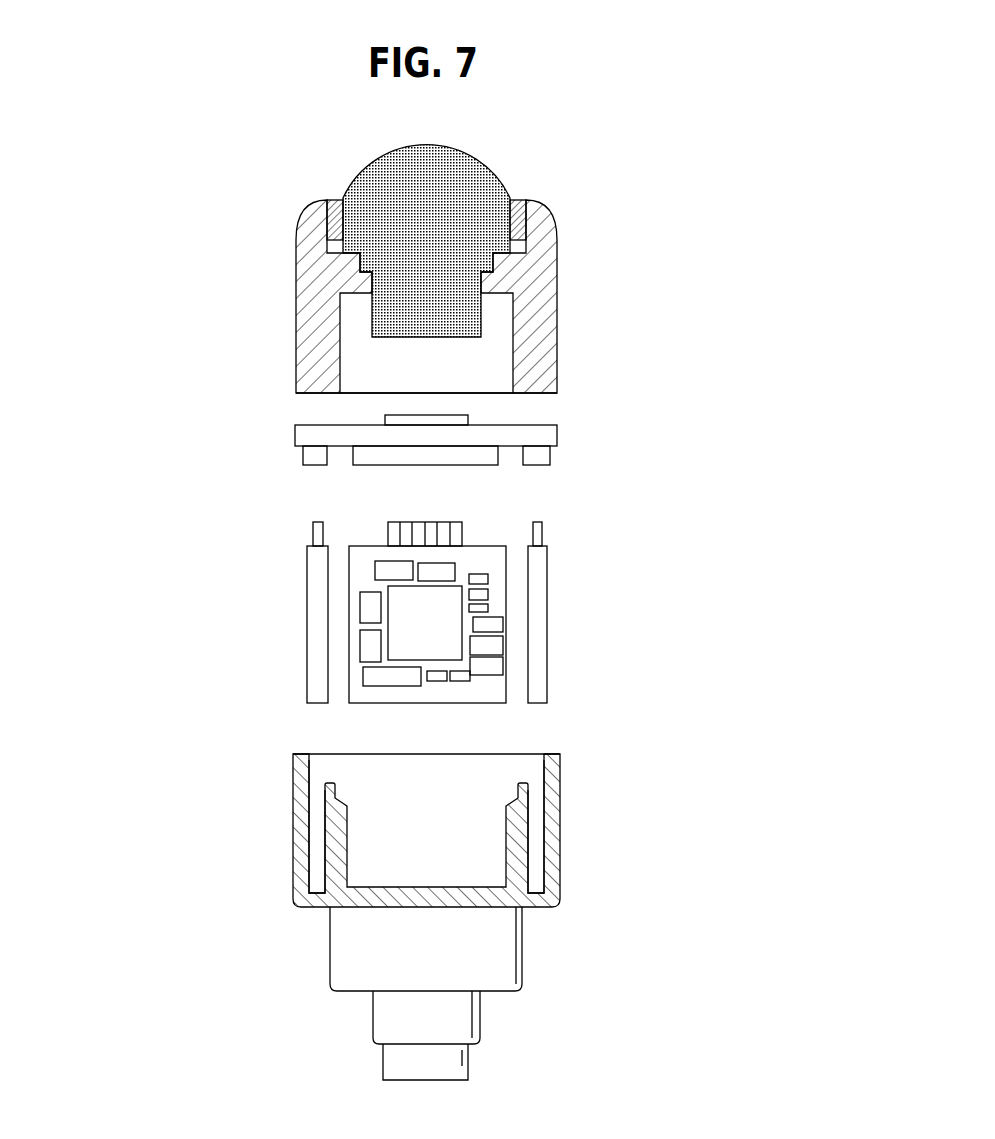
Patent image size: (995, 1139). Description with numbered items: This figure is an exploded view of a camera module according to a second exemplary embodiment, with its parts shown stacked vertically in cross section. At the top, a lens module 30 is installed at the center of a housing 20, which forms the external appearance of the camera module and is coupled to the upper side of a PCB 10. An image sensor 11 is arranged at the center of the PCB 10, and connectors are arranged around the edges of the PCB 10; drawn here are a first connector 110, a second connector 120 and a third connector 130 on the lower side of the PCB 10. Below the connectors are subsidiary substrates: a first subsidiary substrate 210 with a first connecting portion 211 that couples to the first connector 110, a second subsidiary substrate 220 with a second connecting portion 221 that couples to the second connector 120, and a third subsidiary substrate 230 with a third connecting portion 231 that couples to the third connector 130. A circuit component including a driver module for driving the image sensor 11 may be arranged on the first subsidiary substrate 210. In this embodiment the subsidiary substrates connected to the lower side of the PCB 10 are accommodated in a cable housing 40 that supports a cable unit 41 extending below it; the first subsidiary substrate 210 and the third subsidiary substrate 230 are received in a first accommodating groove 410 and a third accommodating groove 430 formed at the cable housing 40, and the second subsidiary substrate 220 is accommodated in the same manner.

The lens module 30 is at (487, 170).
The housing 20 is at (550, 217).
The image sensor 11 is at (468, 418).
The PCB 10 is at (557, 432).
The first connector 110 is at (304, 458).
The second connector 120 is at (372, 465).
The third connector 130 is at (535, 466).
The first connecting portion 211 is at (313, 531).
The second connecting portion 221 is at (463, 530).
The third connecting portion 231 is at (543, 528).
The first subsidiary substrate 210 is at (316, 691).
The second subsidiary substrate 220 is at (467, 696).
The third subsidiary substrate 230 is at (545, 693).
The cable housing 40 is at (296, 800).
The first accommodating groove 410 is at (317, 847).
The third accommodating groove 430 is at (537, 843).
The cable unit 41 is at (385, 1026).